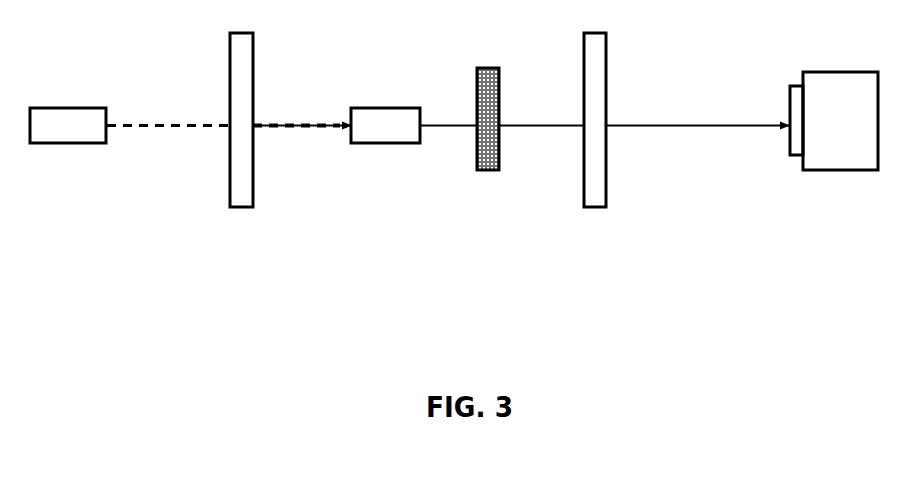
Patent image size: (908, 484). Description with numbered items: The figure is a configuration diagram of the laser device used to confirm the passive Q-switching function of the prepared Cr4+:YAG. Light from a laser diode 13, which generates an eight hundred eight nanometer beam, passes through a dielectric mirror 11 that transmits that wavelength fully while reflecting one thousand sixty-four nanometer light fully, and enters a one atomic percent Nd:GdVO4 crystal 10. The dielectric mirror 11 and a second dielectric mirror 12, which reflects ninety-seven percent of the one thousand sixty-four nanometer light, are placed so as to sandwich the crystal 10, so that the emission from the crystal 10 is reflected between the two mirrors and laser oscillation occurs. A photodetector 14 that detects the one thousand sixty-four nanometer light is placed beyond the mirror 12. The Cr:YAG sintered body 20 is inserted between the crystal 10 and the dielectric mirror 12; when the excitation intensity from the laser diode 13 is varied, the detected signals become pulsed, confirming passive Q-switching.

The laser diode 13 is at (68, 152).
The dielectric mirror 11 is at (239, 148).
The Nd:GdVO4 crystal 10 is at (385, 154).
The Cr:YAG sintered body 20 is at (494, 93).
The dielectric mirror 12 is at (599, 146).
The photodetector 14 is at (834, 147).